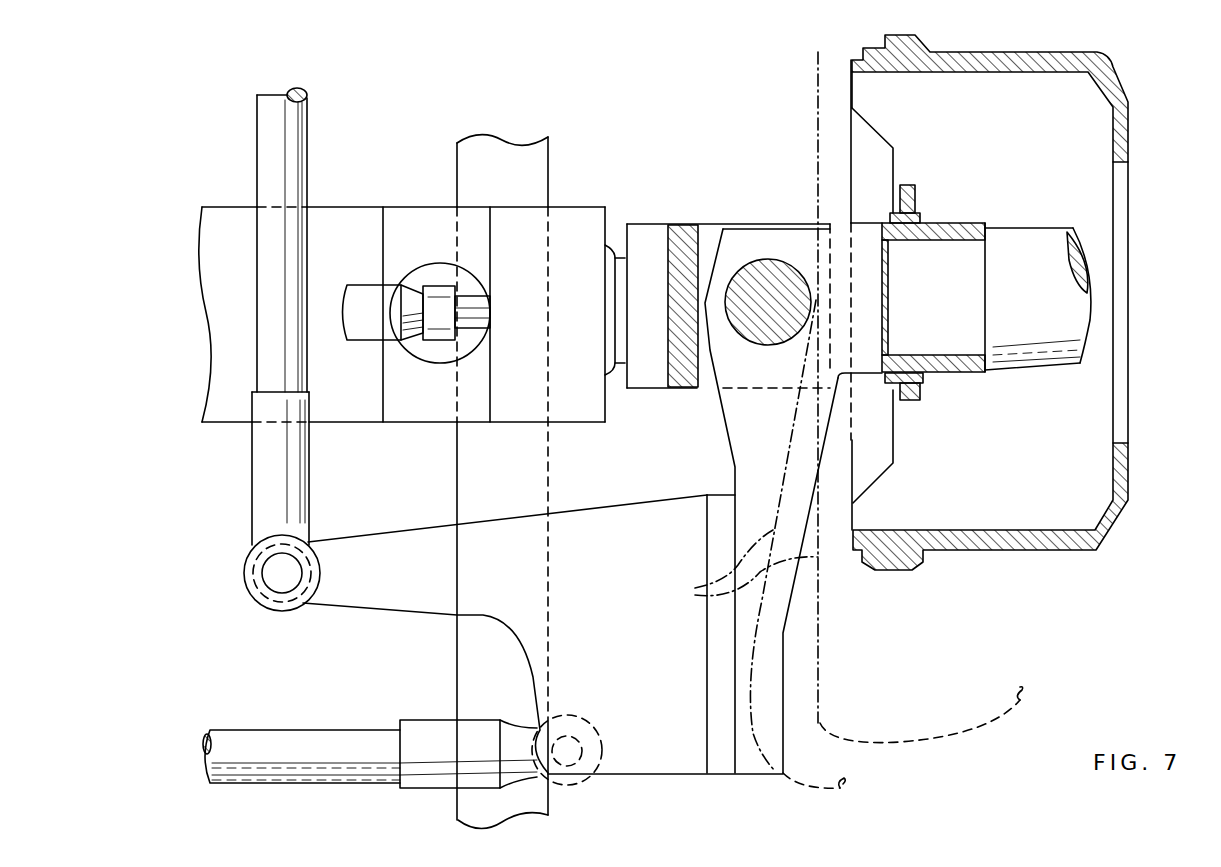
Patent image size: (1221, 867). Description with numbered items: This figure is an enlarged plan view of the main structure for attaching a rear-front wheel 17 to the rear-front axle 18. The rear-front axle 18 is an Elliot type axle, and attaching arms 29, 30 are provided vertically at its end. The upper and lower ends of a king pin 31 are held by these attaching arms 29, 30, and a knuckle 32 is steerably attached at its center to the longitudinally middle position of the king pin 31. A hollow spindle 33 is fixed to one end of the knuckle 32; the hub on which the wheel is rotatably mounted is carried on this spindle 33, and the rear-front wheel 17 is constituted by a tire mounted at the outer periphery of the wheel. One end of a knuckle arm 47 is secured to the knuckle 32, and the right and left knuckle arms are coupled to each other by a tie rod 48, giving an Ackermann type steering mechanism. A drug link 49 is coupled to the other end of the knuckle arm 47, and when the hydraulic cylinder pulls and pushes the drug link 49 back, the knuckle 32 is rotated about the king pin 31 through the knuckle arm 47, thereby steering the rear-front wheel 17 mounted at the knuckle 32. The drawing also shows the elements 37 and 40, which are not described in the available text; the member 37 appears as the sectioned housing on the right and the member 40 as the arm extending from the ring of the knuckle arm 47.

The rear-front wheel 17 is at (744, 568).
The rear-front axle 18 is at (347, 213).
The attaching arm 29 is at (680, 233).
The attaching arm 30 is at (773, 223).
The king pin 31 is at (773, 353).
The knuckle 32 is at (735, 240).
The spindle 33 is at (1040, 347).
The housing 37 is at (1015, 550).
The arm 40 is at (465, 482).
The knuckle arm 47 is at (407, 607).
The tie rod 48 is at (270, 733).
The drug link 49 is at (302, 107).